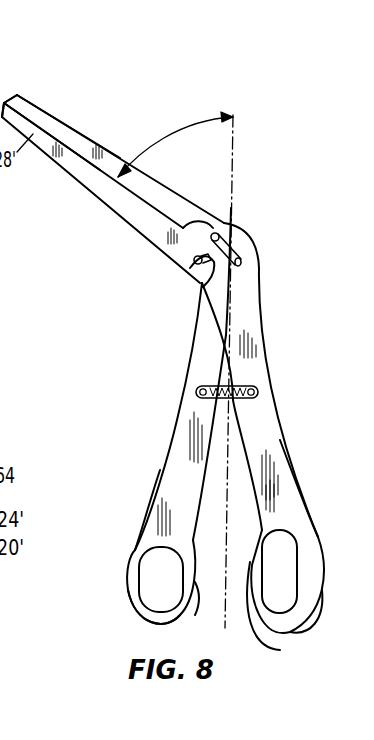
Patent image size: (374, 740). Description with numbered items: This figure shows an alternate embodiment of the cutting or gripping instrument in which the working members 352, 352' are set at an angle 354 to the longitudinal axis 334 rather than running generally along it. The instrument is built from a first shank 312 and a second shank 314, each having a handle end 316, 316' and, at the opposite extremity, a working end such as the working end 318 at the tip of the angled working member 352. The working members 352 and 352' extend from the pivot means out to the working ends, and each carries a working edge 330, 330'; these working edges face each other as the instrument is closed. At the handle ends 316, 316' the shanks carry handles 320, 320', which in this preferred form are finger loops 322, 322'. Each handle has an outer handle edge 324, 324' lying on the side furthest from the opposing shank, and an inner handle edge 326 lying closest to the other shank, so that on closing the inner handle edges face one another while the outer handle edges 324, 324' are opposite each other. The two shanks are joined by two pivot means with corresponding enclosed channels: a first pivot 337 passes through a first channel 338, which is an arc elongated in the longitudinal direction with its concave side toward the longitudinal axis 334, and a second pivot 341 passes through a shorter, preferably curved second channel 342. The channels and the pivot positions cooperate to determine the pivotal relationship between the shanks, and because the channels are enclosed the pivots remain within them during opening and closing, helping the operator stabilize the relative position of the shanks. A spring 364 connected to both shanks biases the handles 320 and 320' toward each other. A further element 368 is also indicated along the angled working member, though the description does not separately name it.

The first shank 312 is at (158, 490).
The second shank 314 is at (264, 402).
The handle end 316 is at (140, 618).
The handle end 316' is at (327, 617).
The working end 318 is at (14, 94).
The handle 320 is at (137, 582).
The handle 320' is at (303, 581).
The finger loop 322 is at (161, 579).
The finger loop 322' is at (279, 571).
The outer handle edge 324 is at (127, 510).
The outer handle edge 324' is at (313, 488).
The inner handle edge 326 is at (288, 650).
The working edge 330 is at (196, 212).
The working edge 330' is at (151, 233).
The longitudinal axis 334 is at (236, 150).
The first pivot 337 is at (222, 235).
The first channel 338 is at (245, 262).
The second pivot 341 is at (194, 259).
The second channel 342 is at (200, 281).
The working member 352 is at (73, 125).
The working member 352' is at (52, 152).
The angle 354 is at (165, 138).
The spring 364 is at (236, 400).
The bar 368 is at (40, 117).